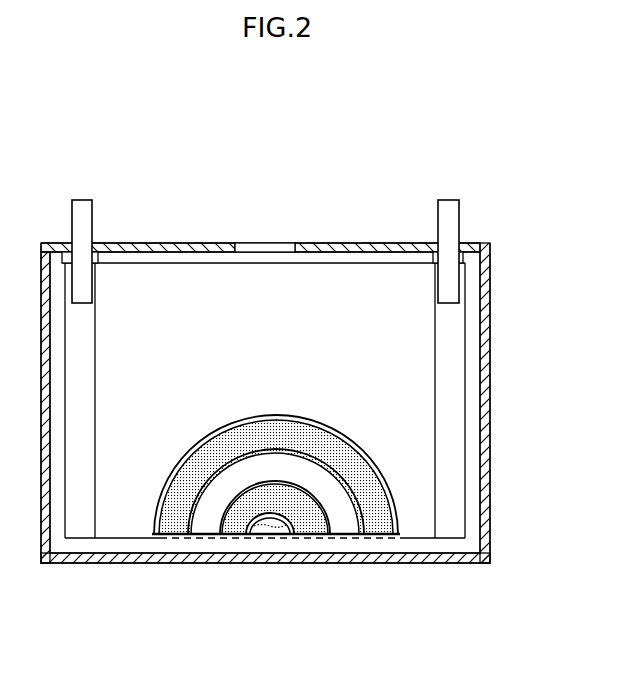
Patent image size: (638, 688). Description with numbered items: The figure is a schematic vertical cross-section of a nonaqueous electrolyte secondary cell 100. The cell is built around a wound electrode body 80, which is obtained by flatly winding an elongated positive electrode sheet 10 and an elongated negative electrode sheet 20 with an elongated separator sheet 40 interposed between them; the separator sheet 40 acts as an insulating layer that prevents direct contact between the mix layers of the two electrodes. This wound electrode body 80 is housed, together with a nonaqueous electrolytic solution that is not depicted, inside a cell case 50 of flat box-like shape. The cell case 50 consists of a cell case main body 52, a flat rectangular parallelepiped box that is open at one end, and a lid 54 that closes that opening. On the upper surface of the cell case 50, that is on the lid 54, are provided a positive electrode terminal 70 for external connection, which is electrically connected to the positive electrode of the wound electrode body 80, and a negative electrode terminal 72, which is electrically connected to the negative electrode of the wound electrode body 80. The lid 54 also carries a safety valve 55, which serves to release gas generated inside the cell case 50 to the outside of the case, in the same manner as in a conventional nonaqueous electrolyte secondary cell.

The nonaqueous electrolyte secondary cell 100 is at (488, 141).
The cell case 50 is at (491, 400).
The cell case main body 52 is at (491, 519).
The lid 54 is at (372, 243).
The safety valve 55 is at (258, 243).
The positive electrode terminal 70 is at (80, 200).
The negative electrode terminal 72 is at (449, 200).
The positive electrode sheet 10 is at (173, 523).
The negative electrode sheet 20 is at (233, 521).
The separator sheet 40 is at (123, 520).
The wound electrode body 80 is at (418, 539).